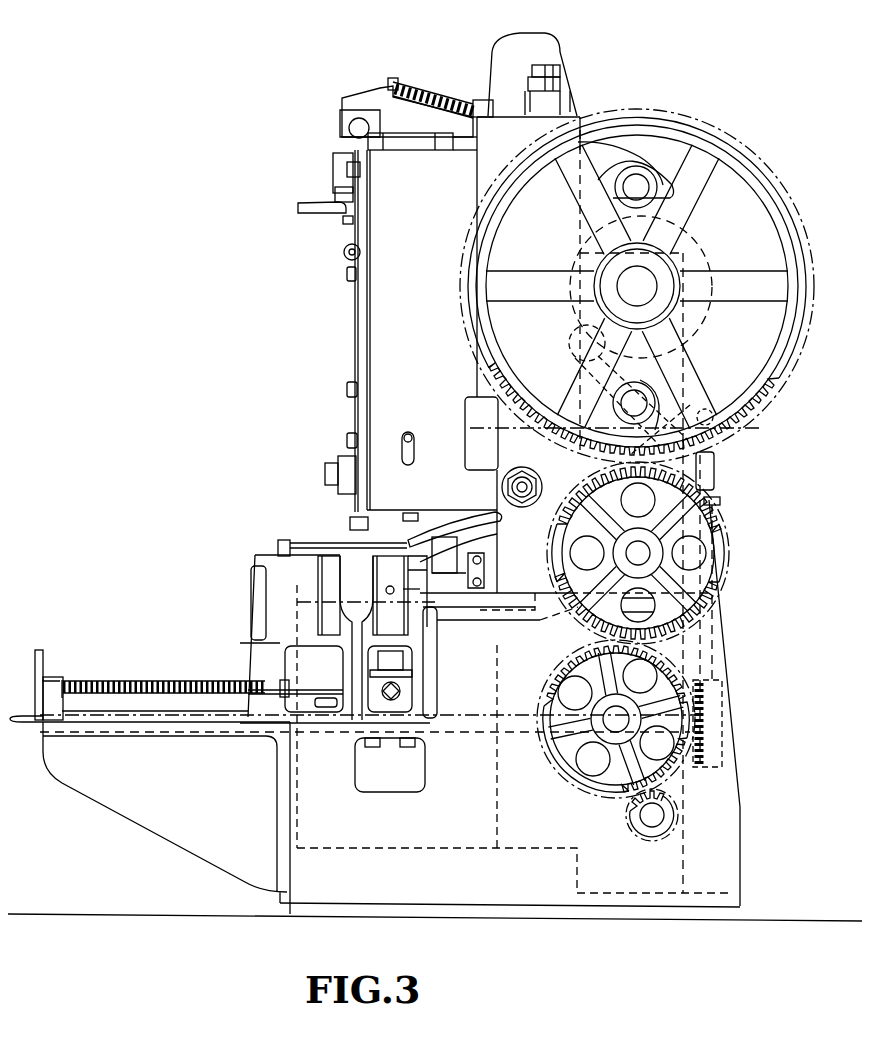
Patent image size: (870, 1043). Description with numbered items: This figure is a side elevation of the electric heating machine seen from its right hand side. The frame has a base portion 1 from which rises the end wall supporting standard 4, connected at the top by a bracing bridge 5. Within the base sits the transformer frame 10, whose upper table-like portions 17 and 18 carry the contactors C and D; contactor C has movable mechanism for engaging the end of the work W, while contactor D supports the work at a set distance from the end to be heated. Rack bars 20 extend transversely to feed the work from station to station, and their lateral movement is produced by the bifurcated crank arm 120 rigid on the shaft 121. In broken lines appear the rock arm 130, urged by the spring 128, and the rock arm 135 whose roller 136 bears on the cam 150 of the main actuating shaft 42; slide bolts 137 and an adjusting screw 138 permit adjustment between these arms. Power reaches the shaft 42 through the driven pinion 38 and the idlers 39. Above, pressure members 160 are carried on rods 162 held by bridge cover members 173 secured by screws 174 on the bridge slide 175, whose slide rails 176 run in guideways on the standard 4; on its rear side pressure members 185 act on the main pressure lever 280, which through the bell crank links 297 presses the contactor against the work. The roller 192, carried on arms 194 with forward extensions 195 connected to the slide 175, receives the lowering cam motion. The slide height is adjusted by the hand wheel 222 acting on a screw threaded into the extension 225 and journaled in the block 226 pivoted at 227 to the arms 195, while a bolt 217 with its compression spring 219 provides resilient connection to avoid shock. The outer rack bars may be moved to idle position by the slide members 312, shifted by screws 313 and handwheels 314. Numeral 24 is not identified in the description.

The base portion 1 is at (435, 821).
The end wall supporting standard 4 is at (540, 360).
The bracing bridge 5 is at (532, 40).
The frame 10 is at (489, 690).
The table-like portion 17 is at (297, 606).
The table-like portion 18 is at (535, 593).
The rack bar 20 is at (392, 560).
The axis line 24 is at (322, 601).
The driven pinion 38 is at (632, 813).
The idler 39 is at (716, 546).
The main actuating shaft 42 is at (637, 286).
The bifurcated crank arm 120 is at (398, 678).
The shaft 121 is at (131, 713).
The spring 128 is at (716, 680).
The rock arm 130 is at (652, 376).
The rock arm 135 is at (575, 375).
The roller 136 is at (572, 336).
The slide bolt 137 is at (566, 440).
The adjusting screw 138 is at (671, 476).
The cam 150 is at (713, 247).
The pressure member 160 is at (352, 517).
The rod 162 is at (355, 300).
The bridge cover member 173 is at (334, 470).
The screw 174 is at (326, 476).
The bridge slide 175 is at (367, 334).
The slide rail 176 is at (410, 142).
The pressure member 185 is at (410, 513).
The roller 192 is at (670, 178).
The arm 194 is at (620, 163).
The forward extension 195 is at (407, 111).
The bolt 217 is at (390, 80).
The compression spring 219 is at (437, 90).
The hand wheel 222 is at (304, 201).
The forward extension 225 is at (334, 165).
The block 226 is at (349, 127).
The pivot 227 is at (341, 112).
The main pressure lever 280 is at (462, 515).
The bell crank link 297 is at (486, 568).
The slide member 312 is at (256, 590).
The screw 313 is at (161, 681).
The handwheel 314 is at (42, 661).
The contactor C is at (489, 555).
The contactor D is at (356, 638).
The work W is at (342, 539).